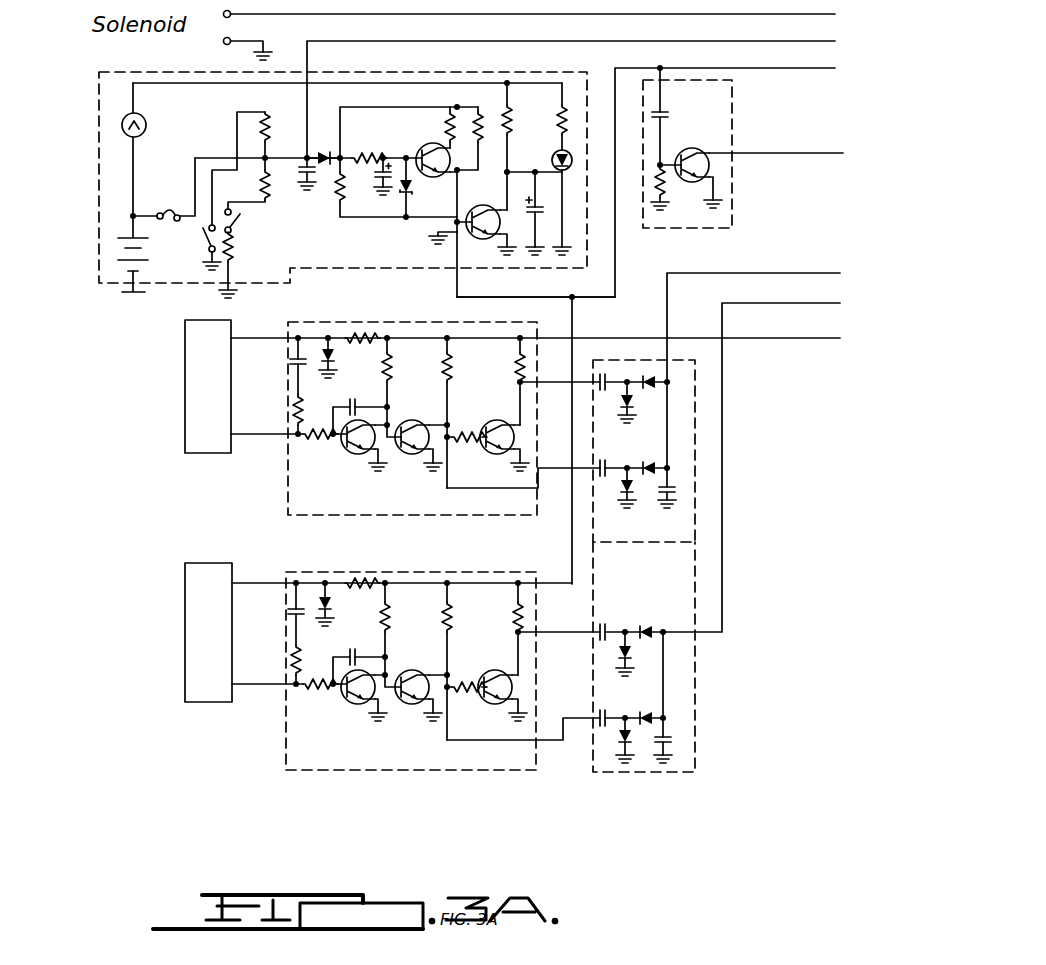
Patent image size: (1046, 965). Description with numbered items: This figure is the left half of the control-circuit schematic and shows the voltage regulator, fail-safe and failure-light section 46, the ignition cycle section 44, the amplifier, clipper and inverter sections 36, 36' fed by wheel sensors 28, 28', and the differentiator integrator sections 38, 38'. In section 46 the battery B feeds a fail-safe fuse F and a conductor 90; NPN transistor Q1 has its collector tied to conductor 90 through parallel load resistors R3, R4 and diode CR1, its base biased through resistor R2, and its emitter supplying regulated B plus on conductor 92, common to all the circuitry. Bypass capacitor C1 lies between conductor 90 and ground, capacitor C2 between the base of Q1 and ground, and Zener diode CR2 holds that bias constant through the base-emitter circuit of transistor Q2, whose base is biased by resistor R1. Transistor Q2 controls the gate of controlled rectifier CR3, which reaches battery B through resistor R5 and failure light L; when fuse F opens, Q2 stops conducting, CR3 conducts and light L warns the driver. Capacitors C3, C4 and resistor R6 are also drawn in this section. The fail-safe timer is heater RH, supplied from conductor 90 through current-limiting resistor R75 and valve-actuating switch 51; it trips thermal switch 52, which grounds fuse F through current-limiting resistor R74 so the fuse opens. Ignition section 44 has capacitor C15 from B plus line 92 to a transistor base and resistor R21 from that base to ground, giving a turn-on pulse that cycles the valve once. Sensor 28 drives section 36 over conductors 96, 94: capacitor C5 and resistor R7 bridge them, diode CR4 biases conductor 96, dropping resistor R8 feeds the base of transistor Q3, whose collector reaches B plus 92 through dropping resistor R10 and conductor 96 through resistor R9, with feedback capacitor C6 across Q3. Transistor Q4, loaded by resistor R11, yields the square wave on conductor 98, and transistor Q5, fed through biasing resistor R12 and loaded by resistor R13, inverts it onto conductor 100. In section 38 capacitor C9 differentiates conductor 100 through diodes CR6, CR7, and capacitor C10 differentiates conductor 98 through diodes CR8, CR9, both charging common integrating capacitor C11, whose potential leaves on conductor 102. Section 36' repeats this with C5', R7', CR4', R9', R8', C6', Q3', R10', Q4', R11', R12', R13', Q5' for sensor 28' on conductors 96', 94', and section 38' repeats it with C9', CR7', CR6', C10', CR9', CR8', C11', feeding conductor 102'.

The voltage regulator, fail safe, and failure light driver section 46 is at (99, 118).
The failure light L is at (146, 118).
The conductor 90 is at (195, 158).
The current-limiting resistor R74 is at (262, 132).
The fail-safe fuse F is at (170, 208).
The battery B is at (118, 252).
The thermal switch 52 is at (203, 242).
The valve-actuating switch 51 is at (238, 220).
The heater RH is at (240, 245).
The current-limiting resistor R75 is at (244, 183).
The diode CR1 is at (323, 150).
The bypass capacitor C1 is at (318, 178).
The biasing resistor R1 is at (340, 205).
The biasing resistor R2 is at (366, 153).
The bypass capacitor C2 is at (378, 175).
The Zener diode CR2 is at (410, 188).
The NPN transistor Q1 is at (428, 148).
The load resistor R3 is at (452, 114).
The load resistor R4 is at (480, 114).
The resistor R5 is at (518, 146).
The NPN transistor Q2 is at (492, 206).
The capacitor C3 is at (432, 240).
The capacitor C4 is at (545, 212).
The resistor R6 is at (558, 115).
The controlled rectifier CR3 is at (552, 160).
The conductor (B plus line) 92 is at (457, 282).
The ignition cycle section 44 is at (732, 125).
The capacitor C15 is at (668, 118).
The resistor R21 is at (668, 185).
The NPN transistor Q3 is at (586, 307).
The output conductor 102 is at (753, 357).
The output conductor 102' is at (751, 467).
The sensor 28 is at (174, 386).
The conductor 96 is at (535, 319).
The conductor 94 is at (264, 456).
The amplifier, clipper and inverter section 36 is at (382, 418).
The capacitor C5 is at (273, 365).
The resistor R7 is at (273, 416).
The biasing diode CR4 is at (345, 356).
The dropping resistor R9 is at (362, 323).
The dropping resistor R8 is at (318, 457).
The feedback capacitor C6 is at (361, 408).
The dropping resistor R10 is at (406, 386).
The NPN transistor Q4 is at (421, 430).
The load resistor R11 is at (463, 411).
The biasing resistor R12 is at (467, 419).
The load resistor R13 is at (490, 380).
The NPN transistor Q5 is at (495, 453).
The output conductor 100 is at (548, 380).
The output conductor 98 is at (545, 490).
The differentiator integrator section 38 is at (674, 451).
The differentiating capacitor C9 is at (615, 360).
The diode CR7 is at (649, 359).
The diode CR6 is at (645, 407).
The differentiating capacitor C10 is at (620, 460).
The diode CR9 is at (654, 459).
The diode CR8 is at (623, 504).
The integrating capacitor C11 is at (707, 487).
The sensor 28' is at (175, 632).
The conductor 96' is at (402, 564).
The conductor 94' is at (263, 706).
The amplifier, clipper and inverter section 36' is at (382, 687).
The capacitor C5' is at (272, 612).
The resistor R7' is at (272, 666).
The biasing diode CR4' is at (335, 588).
The dropping resistor R9' is at (374, 569).
The dropping resistor R8' is at (317, 707).
The feedback capacitor C6' is at (360, 658).
The NPN transistor Q3' is at (356, 712).
The dropping resistor R10' is at (408, 633).
The NPN transistor Q4' is at (421, 680).
The load resistor R11' is at (465, 660).
The biasing resistor R12' is at (467, 669).
The load resistor R13' is at (489, 627).
The NPN transistor Q5' is at (494, 703).
The differentiator integrator section 38' is at (674, 660).
The differentiating capacitor C9' is at (619, 618).
The diode CR7' is at (658, 617).
The diode CR6' is at (641, 663).
The differentiating capacitor C10' is at (619, 709).
The diode CR9' is at (691, 678).
The diode CR8' is at (594, 764).
The integrating capacitor C11' is at (705, 740).